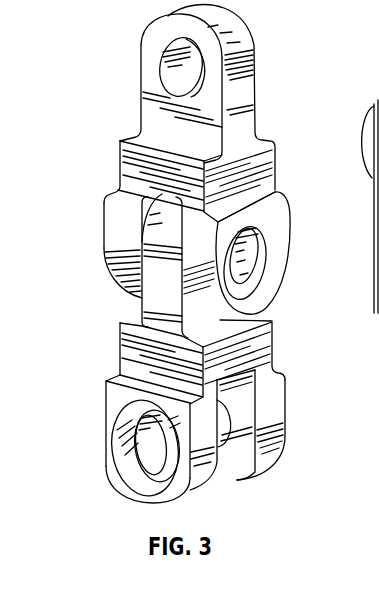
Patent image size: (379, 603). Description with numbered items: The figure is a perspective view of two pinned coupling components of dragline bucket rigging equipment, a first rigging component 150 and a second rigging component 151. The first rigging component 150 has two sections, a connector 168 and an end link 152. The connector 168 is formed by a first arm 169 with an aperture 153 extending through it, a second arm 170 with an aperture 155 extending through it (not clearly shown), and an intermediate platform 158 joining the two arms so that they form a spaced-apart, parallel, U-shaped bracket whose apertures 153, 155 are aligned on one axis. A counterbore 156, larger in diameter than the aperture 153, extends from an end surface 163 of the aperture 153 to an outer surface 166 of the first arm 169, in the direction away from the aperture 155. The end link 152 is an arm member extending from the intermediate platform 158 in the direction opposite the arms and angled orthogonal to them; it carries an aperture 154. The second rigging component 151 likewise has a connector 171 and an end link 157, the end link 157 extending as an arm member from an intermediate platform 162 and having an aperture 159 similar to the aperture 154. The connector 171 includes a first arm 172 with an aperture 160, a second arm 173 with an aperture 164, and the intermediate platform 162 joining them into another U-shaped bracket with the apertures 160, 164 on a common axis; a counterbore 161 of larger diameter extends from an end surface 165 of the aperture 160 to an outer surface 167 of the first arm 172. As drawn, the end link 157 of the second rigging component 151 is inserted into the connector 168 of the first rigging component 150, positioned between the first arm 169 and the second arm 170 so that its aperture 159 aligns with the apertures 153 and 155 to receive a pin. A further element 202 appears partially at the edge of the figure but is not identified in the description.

The first rigging component 150 is at (150, 29).
The end link 152 is at (141, 70).
The aperture 154 is at (186, 75).
The intermediate platform 158 is at (119, 142).
The aperture 155 is at (104, 202).
The second arm 170 is at (103, 247).
The end link 157 is at (133, 298).
The intermediate platform 162 is at (119, 325).
The second rigging component 151 is at (121, 358).
The first arm 172 is at (105, 390).
The end surface 165 is at (136, 421).
The aperture 160 is at (137, 431).
The counterbore 161 is at (128, 474).
The outer surface 167 is at (158, 498).
The connector 168 is at (277, 176).
The end surface 163 is at (231, 268).
The aperture 159 is at (245, 260).
The aperture 153 is at (261, 270).
The outer surface 166 is at (286, 249).
The counterbore 156 is at (268, 273).
The first arm 169 is at (272, 306).
The connector 171 is at (275, 359).
The aperture 164 is at (238, 421).
The second arm 173 is at (278, 444).
The adjacent component 202 is at (373, 101).